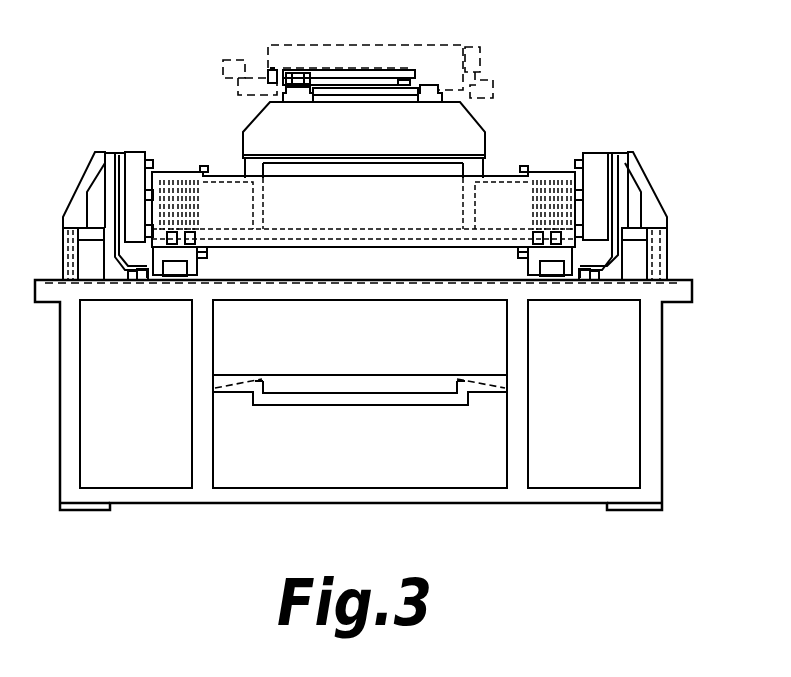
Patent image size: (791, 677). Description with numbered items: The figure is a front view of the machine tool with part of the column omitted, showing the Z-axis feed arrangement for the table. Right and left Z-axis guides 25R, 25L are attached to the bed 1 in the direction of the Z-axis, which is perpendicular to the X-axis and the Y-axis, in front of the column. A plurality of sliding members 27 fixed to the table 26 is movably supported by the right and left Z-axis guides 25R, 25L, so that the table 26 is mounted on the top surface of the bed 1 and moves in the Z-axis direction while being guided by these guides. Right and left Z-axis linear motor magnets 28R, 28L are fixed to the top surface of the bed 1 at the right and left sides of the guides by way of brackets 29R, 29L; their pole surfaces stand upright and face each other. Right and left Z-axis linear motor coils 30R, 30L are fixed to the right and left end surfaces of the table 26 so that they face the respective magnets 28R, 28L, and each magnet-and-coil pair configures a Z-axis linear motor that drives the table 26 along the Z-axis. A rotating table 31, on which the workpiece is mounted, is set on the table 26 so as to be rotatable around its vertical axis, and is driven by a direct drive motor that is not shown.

The bed 1 is at (650, 393).
The left Z-axis guide 25L is at (175, 274).
The right Z-axis guide 25R is at (552, 275).
The table 26 is at (348, 235).
The sliding members 27 is at (198, 263).
The left Z-axis linear motor magnet 28L is at (118, 157).
The right Z-axis linear motor magnet 28R is at (610, 157).
The left bracket 29L is at (102, 200).
The right bracket 29R is at (628, 188).
The left Z-axis linear motor coil 30L is at (138, 157).
The right Z-axis linear motor coil 30R is at (597, 155).
The rotating table 31 is at (476, 125).